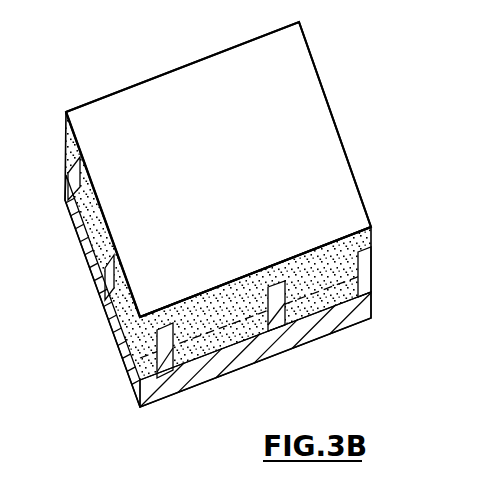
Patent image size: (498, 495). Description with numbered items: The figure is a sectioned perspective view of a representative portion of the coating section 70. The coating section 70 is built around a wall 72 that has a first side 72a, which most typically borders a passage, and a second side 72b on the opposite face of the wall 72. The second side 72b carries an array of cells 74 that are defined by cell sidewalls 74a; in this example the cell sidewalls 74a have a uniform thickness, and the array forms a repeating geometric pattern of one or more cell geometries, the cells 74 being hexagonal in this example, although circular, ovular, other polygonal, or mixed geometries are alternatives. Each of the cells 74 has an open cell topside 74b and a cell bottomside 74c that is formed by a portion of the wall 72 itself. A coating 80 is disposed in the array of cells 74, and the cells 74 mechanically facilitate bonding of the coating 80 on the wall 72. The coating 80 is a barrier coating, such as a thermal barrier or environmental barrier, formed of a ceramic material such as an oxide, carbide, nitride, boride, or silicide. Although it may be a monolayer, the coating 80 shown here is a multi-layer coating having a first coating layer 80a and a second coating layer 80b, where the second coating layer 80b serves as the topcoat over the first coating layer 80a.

The coating section 70 is at (240, 241).
The wall 72 is at (218, 317).
The first side 72a is at (293, 350).
The second side 72b is at (358, 290).
The cells 74 is at (249, 246).
The cell sidewalls 74a is at (292, 320).
The open cell topside 74b is at (187, 313).
The cell bottomside 74c is at (232, 340).
The coating 80 is at (254, 241).
The first coating layer 80a is at (323, 298).
The second coating layer 80b is at (358, 246).